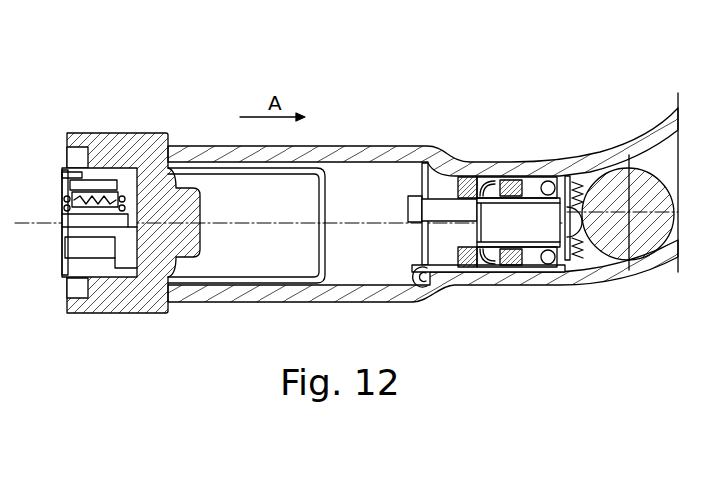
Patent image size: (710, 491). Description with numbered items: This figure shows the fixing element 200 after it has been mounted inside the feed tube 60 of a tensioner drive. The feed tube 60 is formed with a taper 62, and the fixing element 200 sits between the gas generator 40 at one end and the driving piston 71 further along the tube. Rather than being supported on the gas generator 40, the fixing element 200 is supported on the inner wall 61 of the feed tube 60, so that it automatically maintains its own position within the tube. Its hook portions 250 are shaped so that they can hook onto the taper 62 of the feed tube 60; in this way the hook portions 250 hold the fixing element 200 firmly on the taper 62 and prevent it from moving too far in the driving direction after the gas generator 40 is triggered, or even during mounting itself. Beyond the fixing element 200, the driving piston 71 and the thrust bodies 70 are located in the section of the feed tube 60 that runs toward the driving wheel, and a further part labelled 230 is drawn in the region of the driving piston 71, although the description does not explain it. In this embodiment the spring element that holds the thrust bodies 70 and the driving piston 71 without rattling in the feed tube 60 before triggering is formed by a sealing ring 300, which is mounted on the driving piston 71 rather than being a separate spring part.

The gas generator 40 is at (137, 158).
The feed tube 60 is at (407, 157).
The inner wall 61 is at (360, 168).
The taper 62 is at (457, 162).
The thrust bodies 70 is at (637, 168).
The driving piston 71 is at (530, 185).
The fixing element 200 is at (450, 272).
The piston 230 is at (470, 165).
The hook portions 250 is at (414, 290).
The sealing ring 300 is at (520, 272).